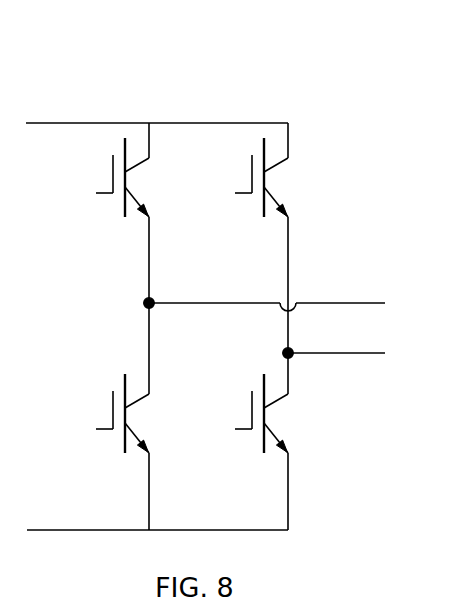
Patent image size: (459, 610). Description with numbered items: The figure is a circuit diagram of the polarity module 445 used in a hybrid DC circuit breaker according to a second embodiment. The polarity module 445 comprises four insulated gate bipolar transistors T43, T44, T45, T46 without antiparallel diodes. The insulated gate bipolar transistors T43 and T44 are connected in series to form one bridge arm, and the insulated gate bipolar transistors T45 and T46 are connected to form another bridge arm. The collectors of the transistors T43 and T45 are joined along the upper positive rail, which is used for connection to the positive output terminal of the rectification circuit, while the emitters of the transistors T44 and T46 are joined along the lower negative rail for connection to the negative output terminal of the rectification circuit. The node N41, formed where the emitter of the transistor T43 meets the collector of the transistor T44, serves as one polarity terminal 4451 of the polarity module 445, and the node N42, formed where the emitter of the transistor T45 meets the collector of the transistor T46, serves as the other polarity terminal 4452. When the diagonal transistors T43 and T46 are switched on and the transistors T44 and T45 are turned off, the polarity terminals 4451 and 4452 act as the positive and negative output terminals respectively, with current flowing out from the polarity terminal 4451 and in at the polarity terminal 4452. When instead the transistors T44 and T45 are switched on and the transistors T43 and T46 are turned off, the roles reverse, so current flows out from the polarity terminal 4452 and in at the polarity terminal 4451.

The polarity module 445 is at (208, 88).
The insulated gate bipolar transistor T43 is at (107, 177).
The insulated gate bipolar transistor T45 is at (247, 177).
The insulated gate bipolar transistor T44 is at (107, 413).
The insulated gate bipolar transistor T46 is at (247, 413).
The node N41 is at (145, 306).
The node N42 is at (283, 353).
The polarity terminal 4451 is at (340, 303).
The polarity terminal 4452 is at (337, 355).